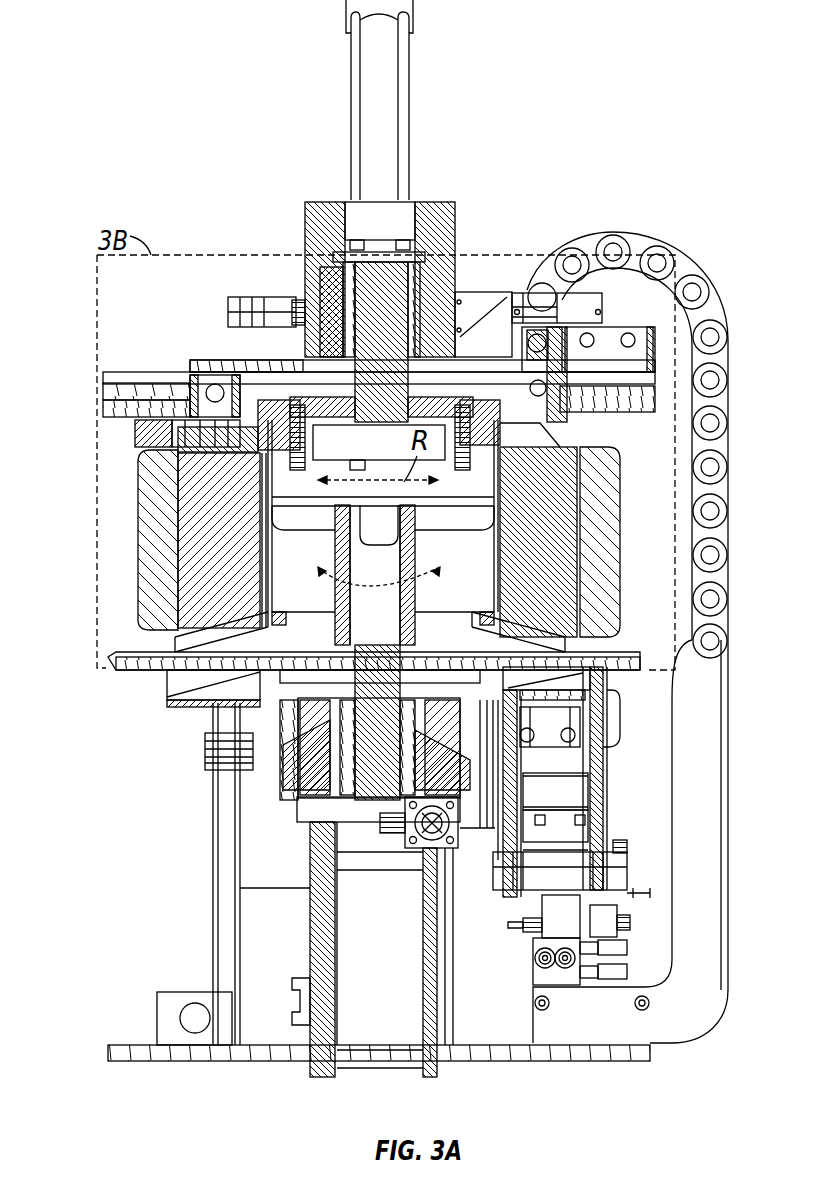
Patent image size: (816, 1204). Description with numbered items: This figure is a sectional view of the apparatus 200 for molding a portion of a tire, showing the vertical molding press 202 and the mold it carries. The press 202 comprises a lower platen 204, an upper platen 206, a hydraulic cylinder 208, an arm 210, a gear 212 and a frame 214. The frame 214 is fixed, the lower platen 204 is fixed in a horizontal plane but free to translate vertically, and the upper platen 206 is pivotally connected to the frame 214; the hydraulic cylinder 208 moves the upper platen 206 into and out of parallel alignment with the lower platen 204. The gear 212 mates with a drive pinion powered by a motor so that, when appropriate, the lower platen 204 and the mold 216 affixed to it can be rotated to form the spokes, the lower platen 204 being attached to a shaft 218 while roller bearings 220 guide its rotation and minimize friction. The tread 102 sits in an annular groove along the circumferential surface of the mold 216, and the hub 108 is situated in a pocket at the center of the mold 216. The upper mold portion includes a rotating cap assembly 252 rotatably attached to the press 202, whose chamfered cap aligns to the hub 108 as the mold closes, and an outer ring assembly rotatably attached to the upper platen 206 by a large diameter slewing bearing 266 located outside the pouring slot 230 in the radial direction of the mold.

The apparatus 200 is at (648, 58).
The hydraulic cylinder 208 is at (368, 112).
The rotating cap assembly 252 is at (380, 226).
The vertical molding press 202 is at (482, 290).
The arm 210 is at (306, 292).
The upper platen 206 is at (235, 360).
The slewing bearing 266 is at (195, 378).
The mold 216 is at (592, 470).
The tread 102 is at (130, 514).
The pouring slot 230 is at (308, 443).
The hub 108 is at (272, 566).
The shaft 218 is at (380, 650).
The lower platen 204 is at (125, 657).
The gear 212 is at (118, 670).
The roller bearings 220 is at (270, 760).
The frame 214 is at (216, 826).